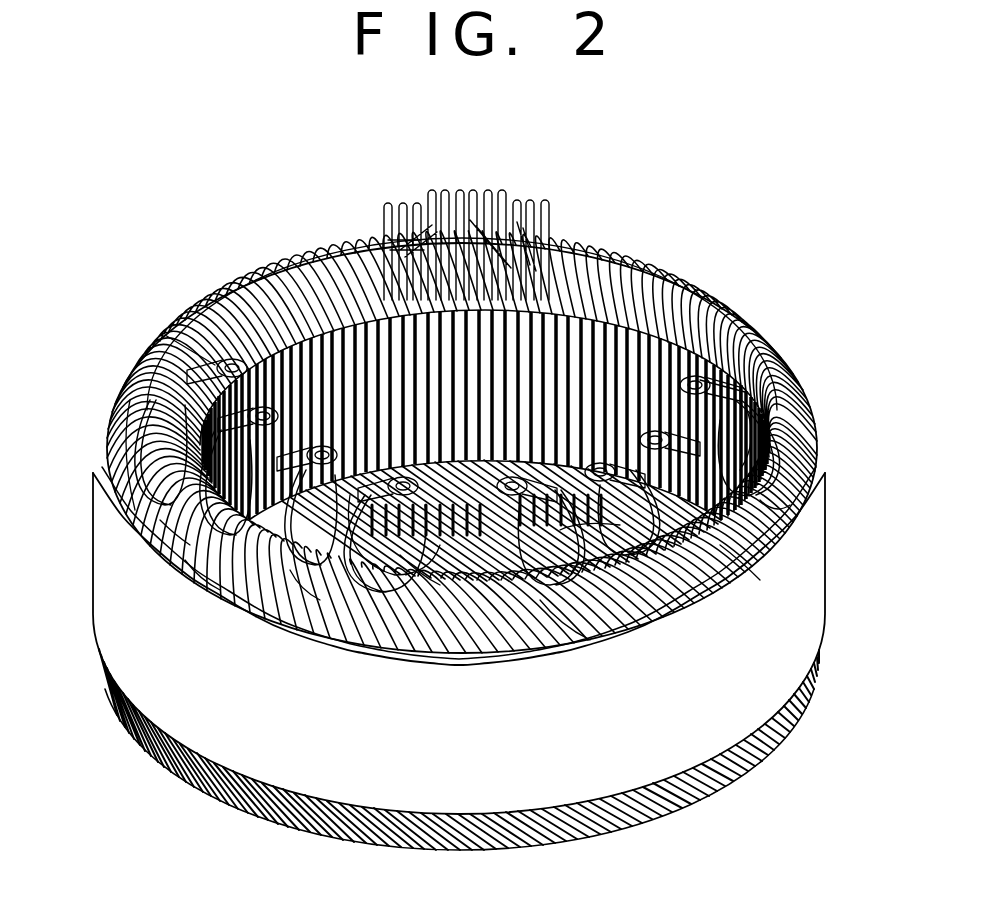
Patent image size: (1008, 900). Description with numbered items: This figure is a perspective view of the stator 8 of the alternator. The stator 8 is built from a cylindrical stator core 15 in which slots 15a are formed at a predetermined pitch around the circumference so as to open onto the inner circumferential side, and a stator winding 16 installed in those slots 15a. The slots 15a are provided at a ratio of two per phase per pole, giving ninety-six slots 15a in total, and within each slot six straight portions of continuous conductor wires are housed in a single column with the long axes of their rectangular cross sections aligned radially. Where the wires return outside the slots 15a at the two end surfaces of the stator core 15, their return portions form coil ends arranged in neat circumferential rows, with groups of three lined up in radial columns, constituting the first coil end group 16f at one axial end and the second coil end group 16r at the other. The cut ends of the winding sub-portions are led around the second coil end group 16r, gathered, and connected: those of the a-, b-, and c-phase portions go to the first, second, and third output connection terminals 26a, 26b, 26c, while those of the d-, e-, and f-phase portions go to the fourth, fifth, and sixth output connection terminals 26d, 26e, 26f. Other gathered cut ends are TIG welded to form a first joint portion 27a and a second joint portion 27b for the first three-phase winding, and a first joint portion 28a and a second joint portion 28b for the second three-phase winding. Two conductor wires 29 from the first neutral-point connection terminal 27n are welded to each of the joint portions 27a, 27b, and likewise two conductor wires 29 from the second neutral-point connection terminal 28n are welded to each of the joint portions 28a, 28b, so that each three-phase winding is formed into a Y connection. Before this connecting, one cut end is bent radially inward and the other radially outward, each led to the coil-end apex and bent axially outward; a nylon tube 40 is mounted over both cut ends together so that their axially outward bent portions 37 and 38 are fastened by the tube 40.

The stator 8 is at (161, 184).
The stator core 15 is at (828, 467).
The slots 15a is at (800, 545).
The stator winding 16 is at (462, 421).
The second coil end group 16r is at (207, 293).
The first coil end group 16f is at (150, 745).
The first output connection terminal 26a is at (700, 385).
The second output connection terminal 26b is at (745, 415).
The third output connection terminal 26c is at (560, 630).
The fourth output connection terminal 26d is at (415, 570).
The fifth output connection terminal 26e is at (127, 412).
The sixth output connection terminal 26f is at (165, 335).
The first joint portion 27a is at (785, 505).
The second joint portion 27b is at (622, 530).
The first neutral-point connection terminal 27n is at (740, 555).
The first joint portion 28a is at (185, 570).
The second joint portion 28b is at (165, 522).
The second neutral-point connection terminal 28n is at (300, 570).
The conductor wires 29 is at (278, 570).
The tube 40 is at (120, 470).
The bent portion 37 is at (430, 600).
The bent portion 38 is at (368, 560).